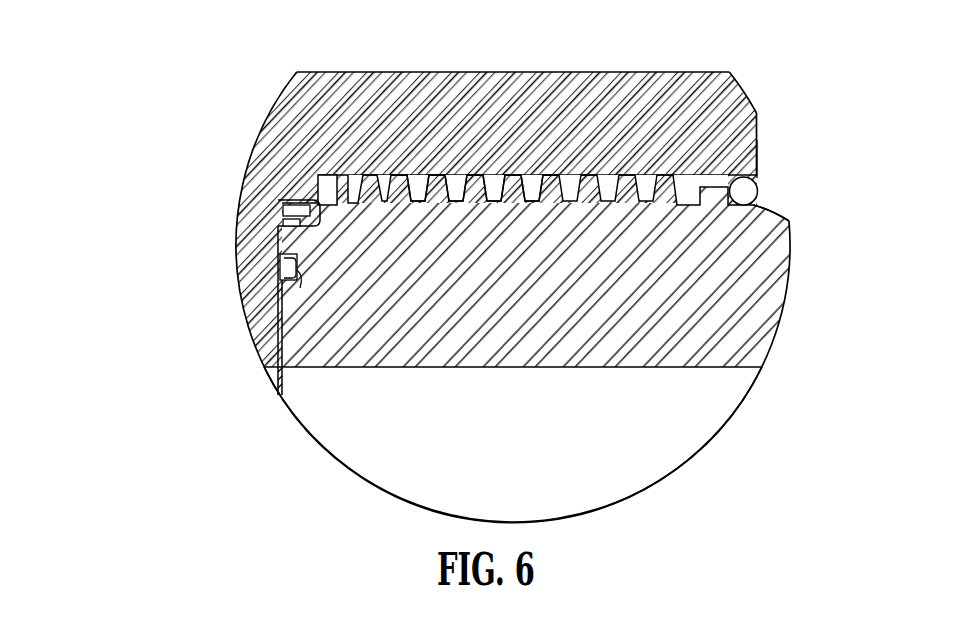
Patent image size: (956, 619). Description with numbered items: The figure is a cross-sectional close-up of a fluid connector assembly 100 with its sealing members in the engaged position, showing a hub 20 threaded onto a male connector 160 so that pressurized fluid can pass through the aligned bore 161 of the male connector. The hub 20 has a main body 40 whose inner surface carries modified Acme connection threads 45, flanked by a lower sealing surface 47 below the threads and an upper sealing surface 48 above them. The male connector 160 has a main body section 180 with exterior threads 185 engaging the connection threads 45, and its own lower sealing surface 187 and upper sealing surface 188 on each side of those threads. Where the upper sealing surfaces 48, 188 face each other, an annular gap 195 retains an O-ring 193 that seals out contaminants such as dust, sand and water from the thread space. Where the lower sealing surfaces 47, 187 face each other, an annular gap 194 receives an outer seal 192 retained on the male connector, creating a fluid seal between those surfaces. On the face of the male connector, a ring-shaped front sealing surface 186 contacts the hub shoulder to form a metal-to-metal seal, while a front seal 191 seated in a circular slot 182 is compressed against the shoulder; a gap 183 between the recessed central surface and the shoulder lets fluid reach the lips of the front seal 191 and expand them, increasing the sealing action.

The fluid connector assembly 100 is at (130, 68).
The hub 20 is at (226, 124).
The main body 40 is at (702, 98).
The connection threads 45 is at (414, 192).
The lower sealing surface 47 is at (314, 197).
The upper sealing surface 48 is at (758, 148).
The male connector 160 is at (810, 299).
The bore 161 is at (681, 435).
The main body section 180 is at (585, 237).
The circular slot 182 is at (290, 295).
The gap 183 is at (271, 379).
The exterior threads 185 is at (512, 189).
The front sealing surface 186 is at (287, 240).
The lower sealing surface 187 is at (288, 231).
The upper sealing surface 188 is at (762, 207).
The front seal 191 is at (287, 258).
The outer seal 192 is at (297, 202).
The O-ring 193 is at (757, 186).
The annular gap 194 is at (278, 211).
The annular gap 195 is at (780, 197).